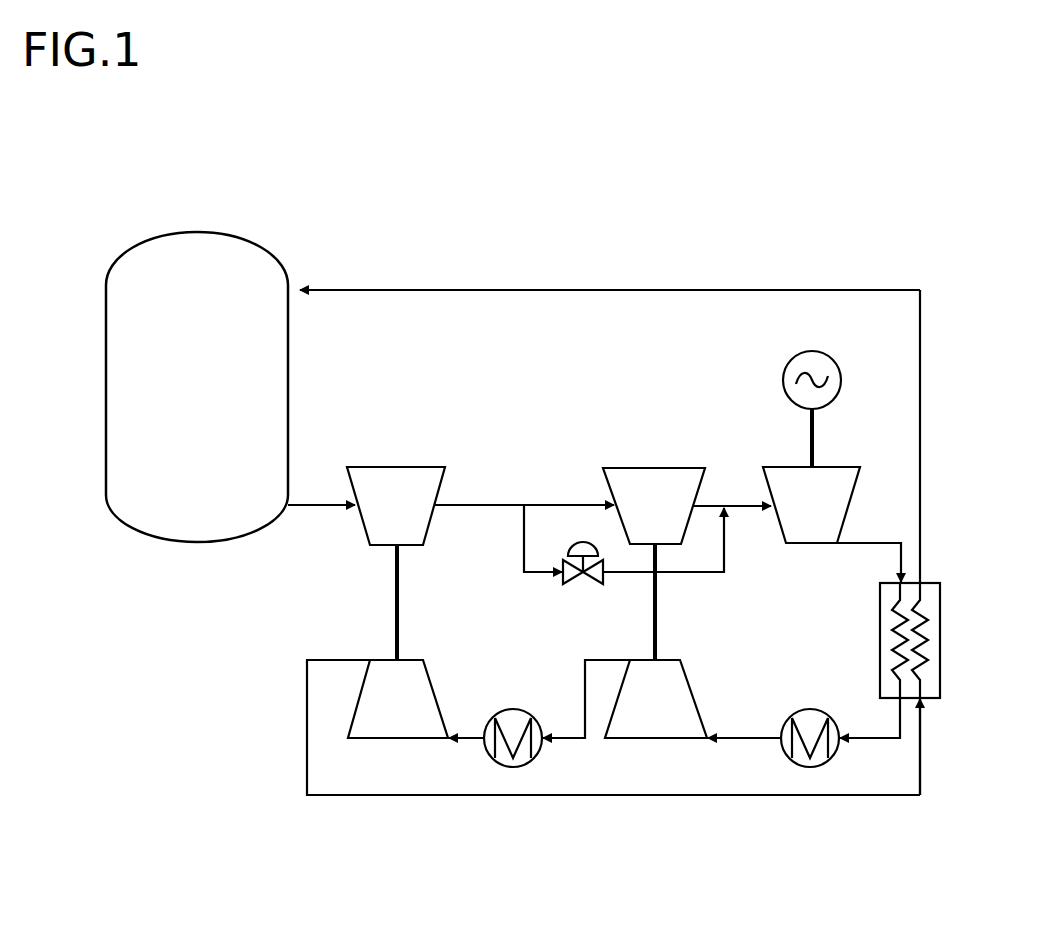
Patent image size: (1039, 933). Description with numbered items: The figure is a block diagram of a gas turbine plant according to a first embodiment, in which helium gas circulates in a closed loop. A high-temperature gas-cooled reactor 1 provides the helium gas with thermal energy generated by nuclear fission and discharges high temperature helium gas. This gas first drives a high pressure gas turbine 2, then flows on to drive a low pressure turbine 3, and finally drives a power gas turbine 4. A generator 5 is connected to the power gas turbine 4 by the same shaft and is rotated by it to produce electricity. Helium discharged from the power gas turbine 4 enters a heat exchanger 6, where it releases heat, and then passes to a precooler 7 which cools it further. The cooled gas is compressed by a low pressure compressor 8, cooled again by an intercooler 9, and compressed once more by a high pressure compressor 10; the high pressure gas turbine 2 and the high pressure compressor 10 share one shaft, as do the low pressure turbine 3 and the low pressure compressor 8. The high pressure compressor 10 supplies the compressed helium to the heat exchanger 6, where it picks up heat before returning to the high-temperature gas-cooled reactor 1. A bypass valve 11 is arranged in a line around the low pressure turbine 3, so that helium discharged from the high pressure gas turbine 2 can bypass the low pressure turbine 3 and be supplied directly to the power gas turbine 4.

The high-temperature gas-cooled reactor 1 is at (288, 372).
The high pressure gas turbine 2 is at (398, 467).
The low pressure turbine 3 is at (655, 468).
The power gas turbine 4 is at (840, 467).
The generator 5 is at (812, 352).
The heat exchanger 6 is at (880, 640).
The precooler 7 is at (815, 710).
The low pressure compressor 8 is at (668, 660).
The intercooler 9 is at (515, 710).
The high pressure compressor 10 is at (415, 660).
The bypass valve 11 is at (590, 582).